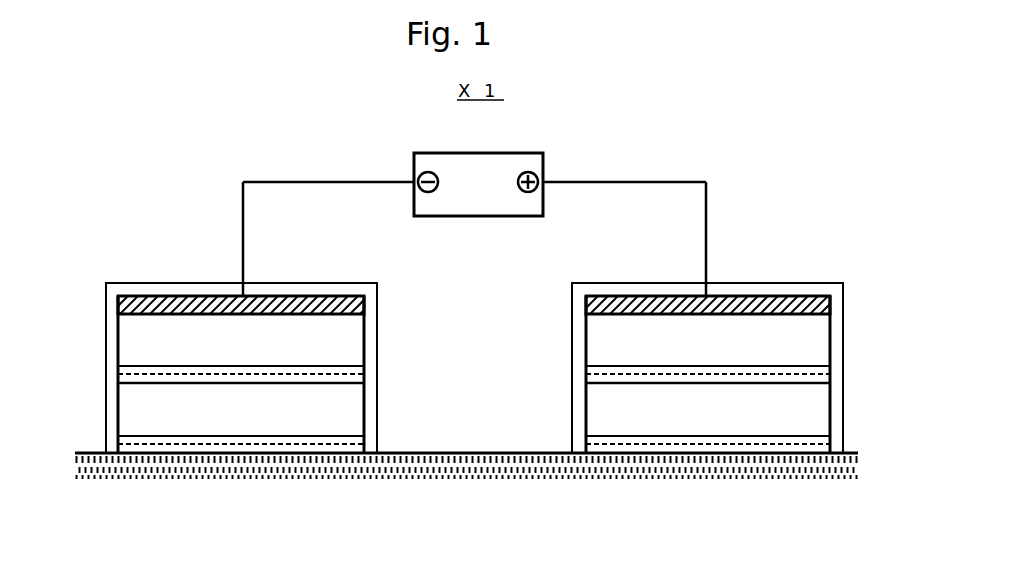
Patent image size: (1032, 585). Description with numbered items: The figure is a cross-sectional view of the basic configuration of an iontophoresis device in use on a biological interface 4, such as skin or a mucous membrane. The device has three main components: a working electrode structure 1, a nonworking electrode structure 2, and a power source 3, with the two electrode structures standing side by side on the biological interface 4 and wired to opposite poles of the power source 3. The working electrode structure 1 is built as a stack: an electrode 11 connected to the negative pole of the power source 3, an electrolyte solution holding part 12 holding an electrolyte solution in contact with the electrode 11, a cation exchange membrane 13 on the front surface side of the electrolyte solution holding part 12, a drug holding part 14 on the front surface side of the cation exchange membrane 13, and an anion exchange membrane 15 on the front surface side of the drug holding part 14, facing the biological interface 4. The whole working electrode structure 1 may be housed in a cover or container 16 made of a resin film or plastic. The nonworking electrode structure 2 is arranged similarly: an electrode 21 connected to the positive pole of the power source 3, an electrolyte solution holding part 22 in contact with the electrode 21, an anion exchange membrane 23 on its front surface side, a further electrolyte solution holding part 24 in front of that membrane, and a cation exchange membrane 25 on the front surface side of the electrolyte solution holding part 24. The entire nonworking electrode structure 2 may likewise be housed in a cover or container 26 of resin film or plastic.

The working electrode structure 1 is at (242, 293).
The nonworking electrode structure 2 is at (708, 292).
The power source 3 is at (568, 161).
The biological interface 4 is at (519, 474).
The electrode 11 is at (117, 298).
The electrolyte solution holding part 12 is at (122, 337).
The cation exchange membrane 13 is at (122, 372).
The drug holding part 14 is at (122, 405).
The anion exchange membrane 15 is at (122, 443).
The container 16 is at (380, 282).
The electrode 21 is at (831, 298).
The electrolyte solution holding part 22 is at (826, 337).
The anion exchange membrane 23 is at (826, 372).
The electrolyte solution holding part 24 is at (826, 405).
The cation exchange membrane 25 is at (826, 443).
The container 26 is at (571, 282).